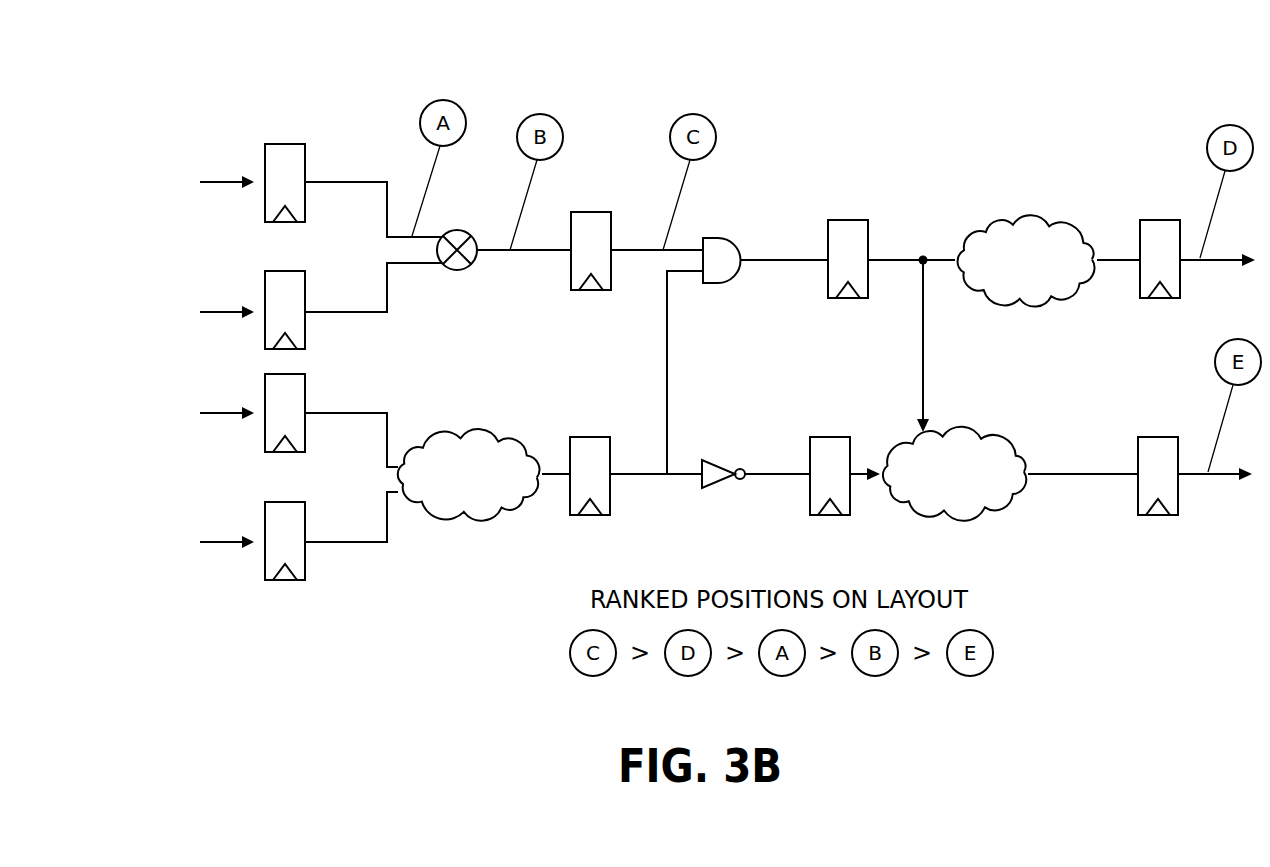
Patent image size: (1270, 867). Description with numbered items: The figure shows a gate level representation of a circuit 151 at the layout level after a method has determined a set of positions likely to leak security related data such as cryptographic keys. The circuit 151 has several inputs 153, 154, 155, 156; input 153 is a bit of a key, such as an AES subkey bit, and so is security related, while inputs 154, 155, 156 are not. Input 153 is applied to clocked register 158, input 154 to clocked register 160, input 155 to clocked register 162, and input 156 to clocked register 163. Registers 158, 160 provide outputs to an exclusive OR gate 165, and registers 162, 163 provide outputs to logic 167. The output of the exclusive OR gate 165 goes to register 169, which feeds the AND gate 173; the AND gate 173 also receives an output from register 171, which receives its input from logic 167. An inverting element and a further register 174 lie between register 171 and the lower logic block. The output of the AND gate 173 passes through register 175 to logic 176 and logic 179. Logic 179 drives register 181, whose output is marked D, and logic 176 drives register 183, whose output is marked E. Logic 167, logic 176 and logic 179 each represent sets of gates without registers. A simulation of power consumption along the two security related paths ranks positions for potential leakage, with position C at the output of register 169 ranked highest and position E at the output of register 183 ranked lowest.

The circuit 151 is at (922, 72).
The input 153 is at (148, 181).
The input 154 is at (168, 306).
The input 155 is at (168, 418).
The input 156 is at (168, 544).
The clocked register 158 is at (295, 143).
The clocked register 160 is at (295, 270).
The clocked register 162 is at (295, 373).
The clocked register 163 is at (295, 502).
The exclusive OR (XOR) gate 165 is at (460, 270).
The logic 167 is at (477, 522).
The register 169 is at (595, 212).
The register 171 is at (612, 505).
The AND gate 173 is at (713, 283).
The register 174 is at (808, 503).
The register 175 is at (852, 220).
The logic 176 is at (960, 517).
The logic 179 is at (1038, 305).
The register 181 is at (1148, 220).
The register 183 is at (1180, 502).